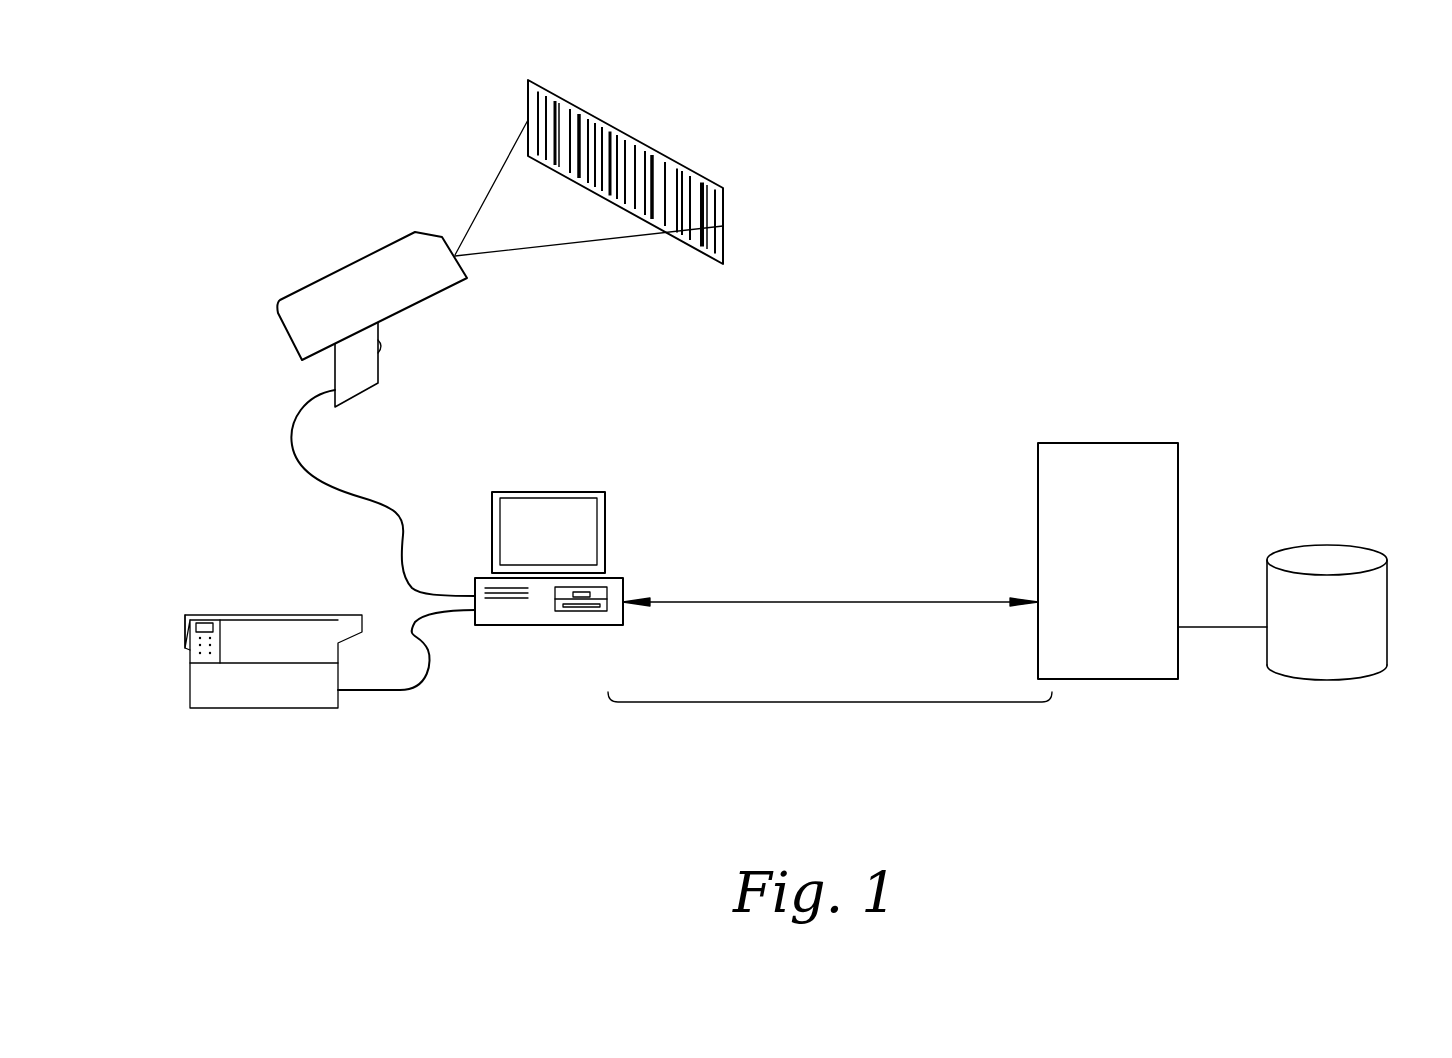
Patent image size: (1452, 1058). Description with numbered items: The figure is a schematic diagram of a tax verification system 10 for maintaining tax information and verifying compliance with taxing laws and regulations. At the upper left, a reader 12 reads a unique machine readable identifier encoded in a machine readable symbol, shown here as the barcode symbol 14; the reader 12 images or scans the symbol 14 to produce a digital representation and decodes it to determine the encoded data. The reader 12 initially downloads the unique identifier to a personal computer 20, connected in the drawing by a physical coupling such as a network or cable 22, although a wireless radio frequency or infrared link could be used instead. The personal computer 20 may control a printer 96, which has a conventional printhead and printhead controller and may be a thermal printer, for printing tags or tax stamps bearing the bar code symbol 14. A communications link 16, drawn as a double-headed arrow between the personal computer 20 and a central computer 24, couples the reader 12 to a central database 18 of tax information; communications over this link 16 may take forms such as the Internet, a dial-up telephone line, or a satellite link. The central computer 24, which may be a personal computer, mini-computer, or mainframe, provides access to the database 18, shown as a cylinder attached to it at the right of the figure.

The tax verification system 10 is at (1047, 272).
The reader 12 is at (288, 338).
The barcode symbol 14 is at (724, 205).
The communications link 16 is at (820, 702).
The central database 18 is at (1388, 645).
The personal computer 20 is at (605, 522).
The cable 22 is at (315, 482).
The central computer 24 is at (1178, 465).
The printer 96 is at (190, 695).